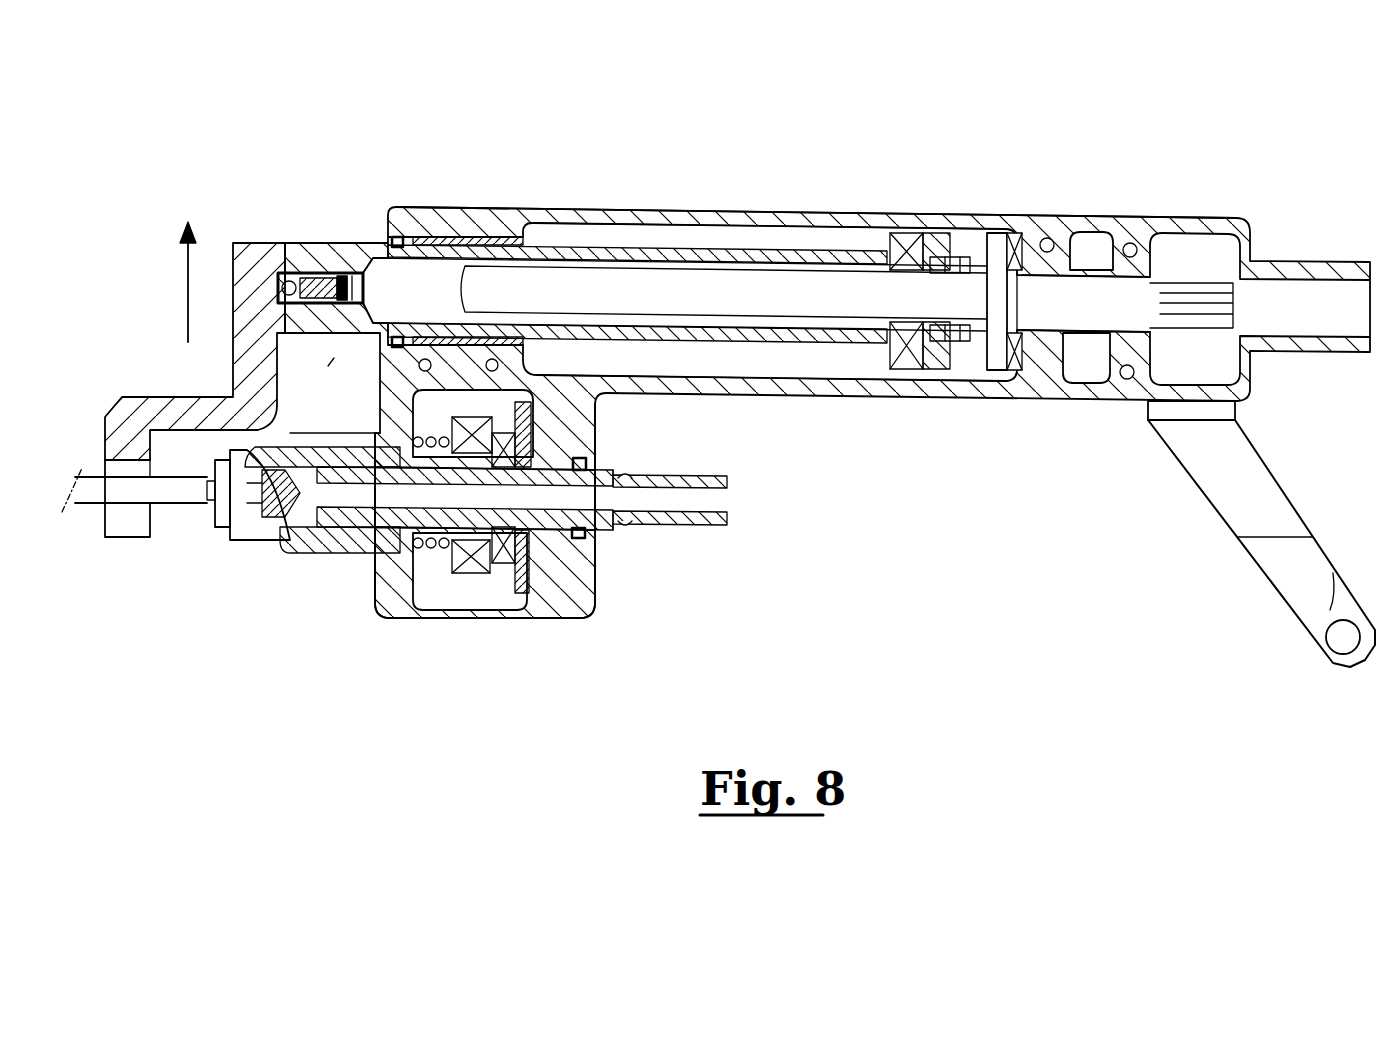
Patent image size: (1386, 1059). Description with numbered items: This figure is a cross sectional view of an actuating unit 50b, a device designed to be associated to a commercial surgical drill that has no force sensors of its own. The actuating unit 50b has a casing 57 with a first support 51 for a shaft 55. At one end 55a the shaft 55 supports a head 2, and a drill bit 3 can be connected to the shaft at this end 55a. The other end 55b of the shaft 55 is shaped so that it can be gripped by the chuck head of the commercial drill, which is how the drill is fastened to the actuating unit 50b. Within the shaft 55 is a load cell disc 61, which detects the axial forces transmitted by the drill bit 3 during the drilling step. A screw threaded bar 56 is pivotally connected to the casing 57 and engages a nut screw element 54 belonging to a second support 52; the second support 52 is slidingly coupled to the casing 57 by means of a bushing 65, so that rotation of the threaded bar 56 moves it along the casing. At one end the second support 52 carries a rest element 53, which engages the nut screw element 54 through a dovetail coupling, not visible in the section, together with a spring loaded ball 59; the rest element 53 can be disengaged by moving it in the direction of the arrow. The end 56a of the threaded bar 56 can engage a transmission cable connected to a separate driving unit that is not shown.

The head 2 is at (225, 517).
The drill bit 3 is at (160, 493).
The actuating unit 50b is at (623, 207).
The first support 51 is at (593, 573).
The second support 52 is at (361, 240).
The rest element 53 is at (245, 257).
The nut screw element 54 is at (897, 247).
The shaft 55 is at (553, 515).
The end of shaft 55a is at (328, 515).
The other end of shaft 55b is at (693, 515).
The screw threaded bar 56 is at (713, 273).
The end of threaded bar 56a is at (1180, 287).
The casing 57 is at (827, 213).
The spring loaded ball 59 is at (287, 243).
The load cell disc 61 is at (520, 550).
The bushing 65 is at (470, 237).